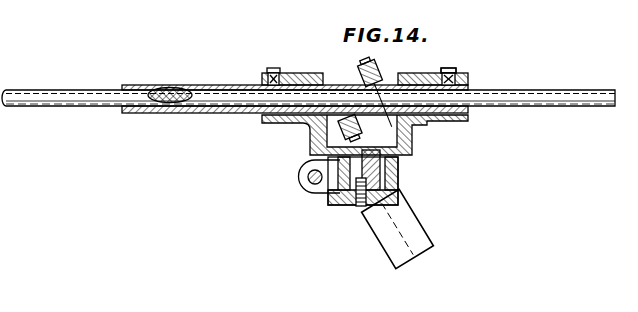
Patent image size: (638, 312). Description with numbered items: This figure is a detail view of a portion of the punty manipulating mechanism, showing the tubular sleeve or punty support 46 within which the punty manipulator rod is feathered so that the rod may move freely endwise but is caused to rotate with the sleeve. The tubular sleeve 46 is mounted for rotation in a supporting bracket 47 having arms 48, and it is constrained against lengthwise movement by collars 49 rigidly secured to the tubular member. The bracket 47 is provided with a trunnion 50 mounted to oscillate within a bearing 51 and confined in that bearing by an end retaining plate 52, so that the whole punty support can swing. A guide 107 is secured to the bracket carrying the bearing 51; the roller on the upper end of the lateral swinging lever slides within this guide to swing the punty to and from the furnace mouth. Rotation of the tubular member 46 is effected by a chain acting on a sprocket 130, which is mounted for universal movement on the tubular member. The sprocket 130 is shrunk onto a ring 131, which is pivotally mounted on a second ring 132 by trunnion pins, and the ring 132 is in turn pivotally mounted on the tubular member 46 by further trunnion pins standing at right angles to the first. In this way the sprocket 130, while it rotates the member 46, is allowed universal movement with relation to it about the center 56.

The tubular sleeve 46 is at (217, 114).
The supporting bracket 47 is at (310, 164).
The arms 48 is at (308, 128).
The collars 49 is at (265, 73).
The trunnion 50 is at (327, 198).
The bearing 51 is at (400, 182).
The end retaining plate 52 is at (352, 207).
The center 56 is at (386, 88).
The guide 107 is at (418, 233).
The sprocket 130 is at (392, 73).
The ring 131 is at (362, 66).
The ring 132 is at (361, 128).